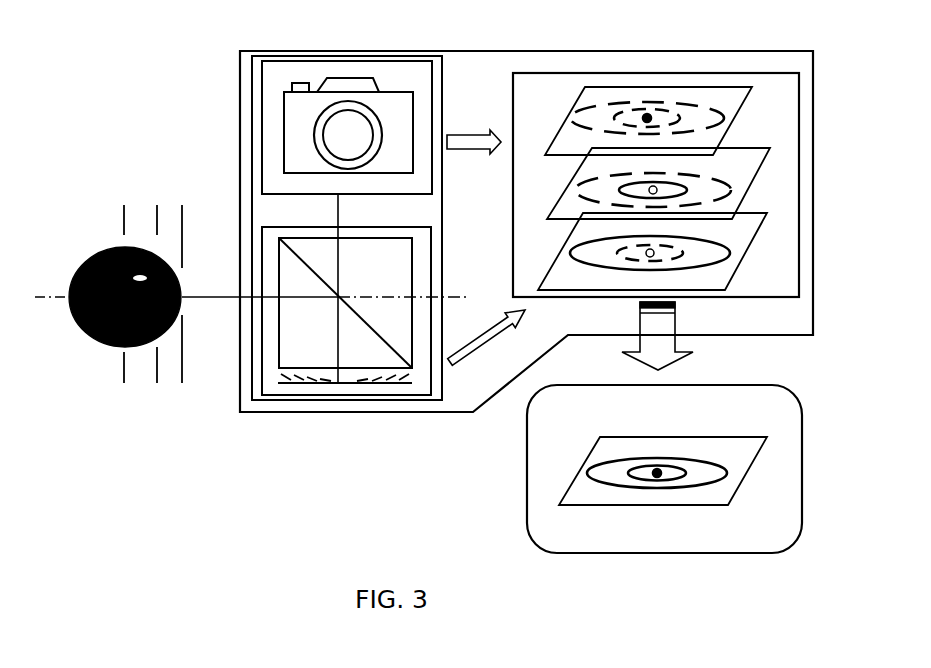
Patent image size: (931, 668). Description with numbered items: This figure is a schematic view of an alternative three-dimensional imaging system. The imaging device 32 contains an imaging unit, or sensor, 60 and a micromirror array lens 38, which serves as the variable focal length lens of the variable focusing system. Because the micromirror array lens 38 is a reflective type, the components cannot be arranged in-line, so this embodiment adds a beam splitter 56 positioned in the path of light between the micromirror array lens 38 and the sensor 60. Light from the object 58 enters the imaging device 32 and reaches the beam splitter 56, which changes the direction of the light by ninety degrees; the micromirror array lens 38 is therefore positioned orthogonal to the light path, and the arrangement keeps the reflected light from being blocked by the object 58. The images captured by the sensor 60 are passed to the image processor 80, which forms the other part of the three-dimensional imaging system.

The imaging device 32 is at (252, 393).
The micromirror array lens 38 is at (402, 387).
The beam splitter 56 is at (273, 330).
The object 58 is at (92, 340).
The imaging unit 60 is at (262, 92).
The image processor 80 is at (703, 73).